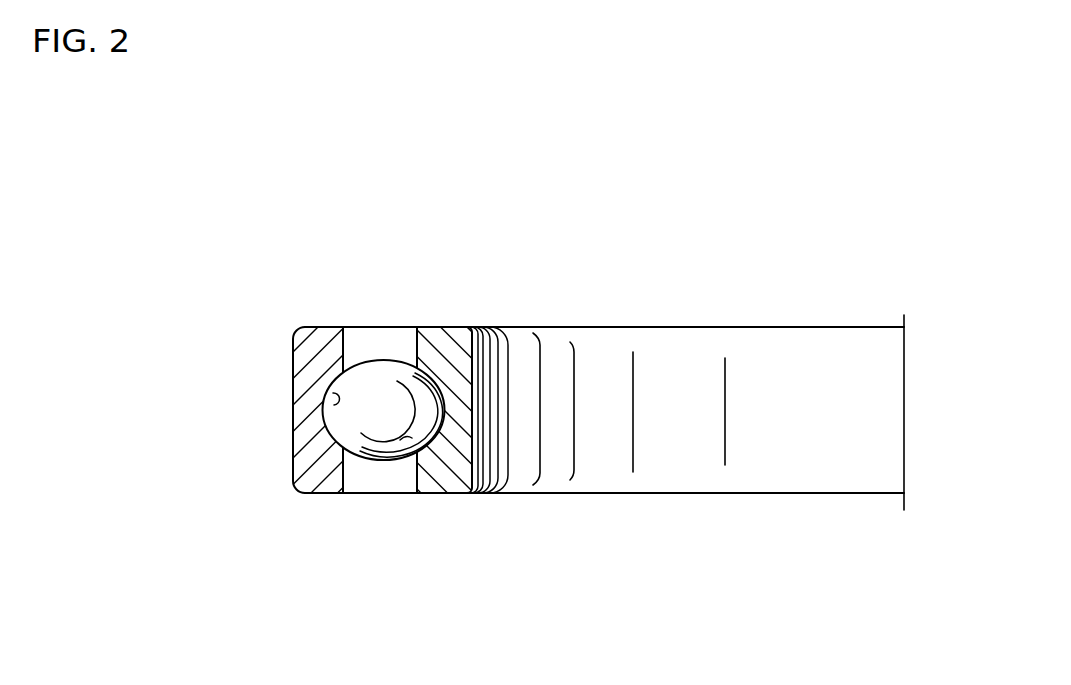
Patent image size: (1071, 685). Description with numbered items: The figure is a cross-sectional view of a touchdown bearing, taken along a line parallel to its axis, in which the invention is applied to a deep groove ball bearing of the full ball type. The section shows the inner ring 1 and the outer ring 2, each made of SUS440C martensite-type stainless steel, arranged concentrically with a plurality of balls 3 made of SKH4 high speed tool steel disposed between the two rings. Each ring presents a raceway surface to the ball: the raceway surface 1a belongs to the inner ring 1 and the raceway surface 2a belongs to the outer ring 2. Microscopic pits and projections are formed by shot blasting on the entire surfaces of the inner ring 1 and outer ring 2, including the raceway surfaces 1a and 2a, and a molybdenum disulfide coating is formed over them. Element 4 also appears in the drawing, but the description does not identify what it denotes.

The inner ring 1 is at (465, 427).
The raceway surface 1a is at (405, 440).
The outer ring 2 is at (328, 350).
The raceway surface 2a is at (337, 396).
The ball 3 is at (387, 358).
The retainer 4 is at (383, 445).